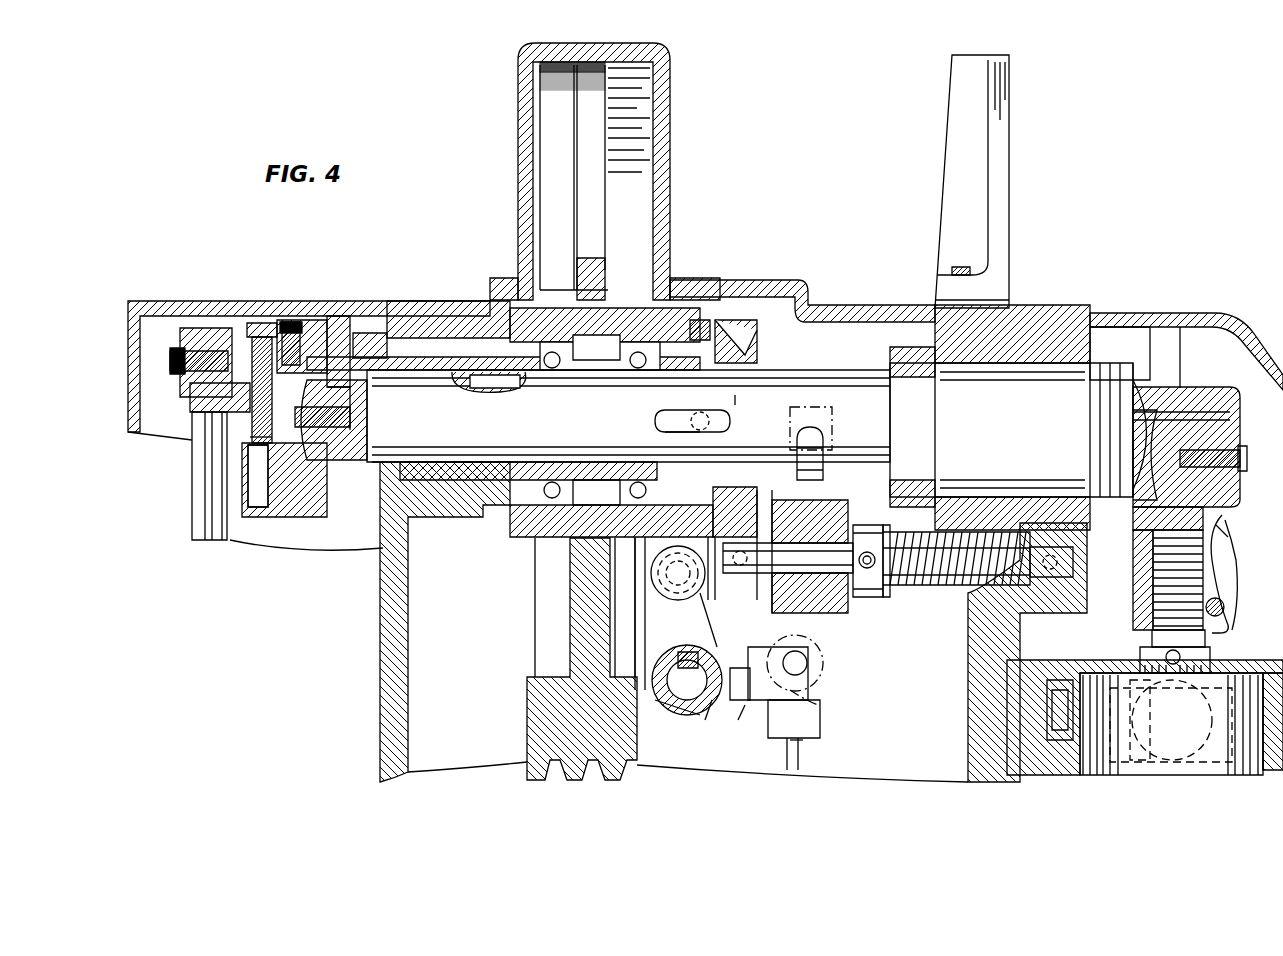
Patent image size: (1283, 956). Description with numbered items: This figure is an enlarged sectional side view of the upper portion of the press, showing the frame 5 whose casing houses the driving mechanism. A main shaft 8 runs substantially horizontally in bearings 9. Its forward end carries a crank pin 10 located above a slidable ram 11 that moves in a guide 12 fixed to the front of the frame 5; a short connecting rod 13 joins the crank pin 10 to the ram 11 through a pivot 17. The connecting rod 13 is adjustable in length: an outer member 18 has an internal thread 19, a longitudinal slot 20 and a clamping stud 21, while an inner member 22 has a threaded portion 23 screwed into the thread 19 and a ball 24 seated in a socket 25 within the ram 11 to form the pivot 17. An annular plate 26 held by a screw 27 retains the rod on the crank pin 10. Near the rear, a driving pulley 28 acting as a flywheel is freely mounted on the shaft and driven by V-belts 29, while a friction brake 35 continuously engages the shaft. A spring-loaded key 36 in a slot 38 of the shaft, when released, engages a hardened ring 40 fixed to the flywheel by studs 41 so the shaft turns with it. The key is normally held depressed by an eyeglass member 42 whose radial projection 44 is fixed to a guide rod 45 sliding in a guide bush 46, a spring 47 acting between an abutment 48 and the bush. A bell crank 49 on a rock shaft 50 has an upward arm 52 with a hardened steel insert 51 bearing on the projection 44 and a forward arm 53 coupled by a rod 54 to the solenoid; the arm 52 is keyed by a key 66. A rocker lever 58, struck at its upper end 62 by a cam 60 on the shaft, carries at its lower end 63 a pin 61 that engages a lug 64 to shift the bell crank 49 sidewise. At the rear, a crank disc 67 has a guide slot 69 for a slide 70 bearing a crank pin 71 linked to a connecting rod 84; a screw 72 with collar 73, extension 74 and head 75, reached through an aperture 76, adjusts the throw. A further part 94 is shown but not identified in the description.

The frame 5 is at (1055, 328).
The main shaft 8 is at (721, 430).
The bearings 9 is at (395, 355).
The crank pin 10 is at (1153, 383).
The slidable ram 11 is at (1215, 760).
The guide 12 is at (1280, 760).
The connecting rod 13 is at (1235, 536).
The pivot 17 is at (1134, 668).
The outer member 18 is at (1133, 550).
The internal thread 19 is at (1133, 528).
The longitudinal slot 20 is at (1222, 562).
The clamping stud 21 is at (1224, 605).
The inner member 22 is at (1195, 658).
The threaded portion 23 is at (1160, 575).
The ball 24 is at (1122, 768).
The socket 25 is at (1175, 765).
The annular plate 26 is at (1232, 410).
The screw 27 is at (1240, 458).
The driving pulley 28 is at (630, 128).
The V-belts 29 is at (575, 86).
The friction brake 35 is at (372, 332).
The spring-loaded key 36 is at (698, 428).
The key way or slot 38 is at (735, 400).
The hardened ring 40 is at (695, 375).
The studs 41 is at (700, 322).
The eyeglass member 42 is at (760, 330).
The radial projection 44 is at (745, 585).
The guide rod 45 is at (903, 590).
The guide bush 46 is at (1030, 590).
The spring 47 is at (935, 590).
The abutment 48 is at (862, 540).
The bell crank 49 is at (645, 644).
The rock shaft 50 is at (670, 714).
The hardened steel insert 51 is at (660, 562).
The upwardly extending arm 52 is at (660, 602).
The forwardly extending arm 53 is at (818, 683).
The rod 54 is at (812, 742).
The rocker lever 58 is at (810, 648).
The cam 60 is at (797, 431).
The laterally projecting pin 61 is at (706, 727).
The upper end of rocker lever 62 is at (792, 408).
The downwardly directed end 63 is at (820, 710).
The lug 64 is at (739, 730).
The key 66 is at (678, 660).
The crank disc 67 is at (338, 330).
The diametrical guide slot 69 is at (250, 415).
The slide 70 is at (212, 345).
The crank pin 71 is at (190, 350).
The screw 72 is at (255, 438).
The collar 73 is at (245, 340).
The upwardly directed extension 74 is at (255, 470).
The head 75 is at (285, 320).
The aperture 76 is at (265, 320).
The connecting rod 84 is at (200, 503).
The lever 94 is at (1005, 225).